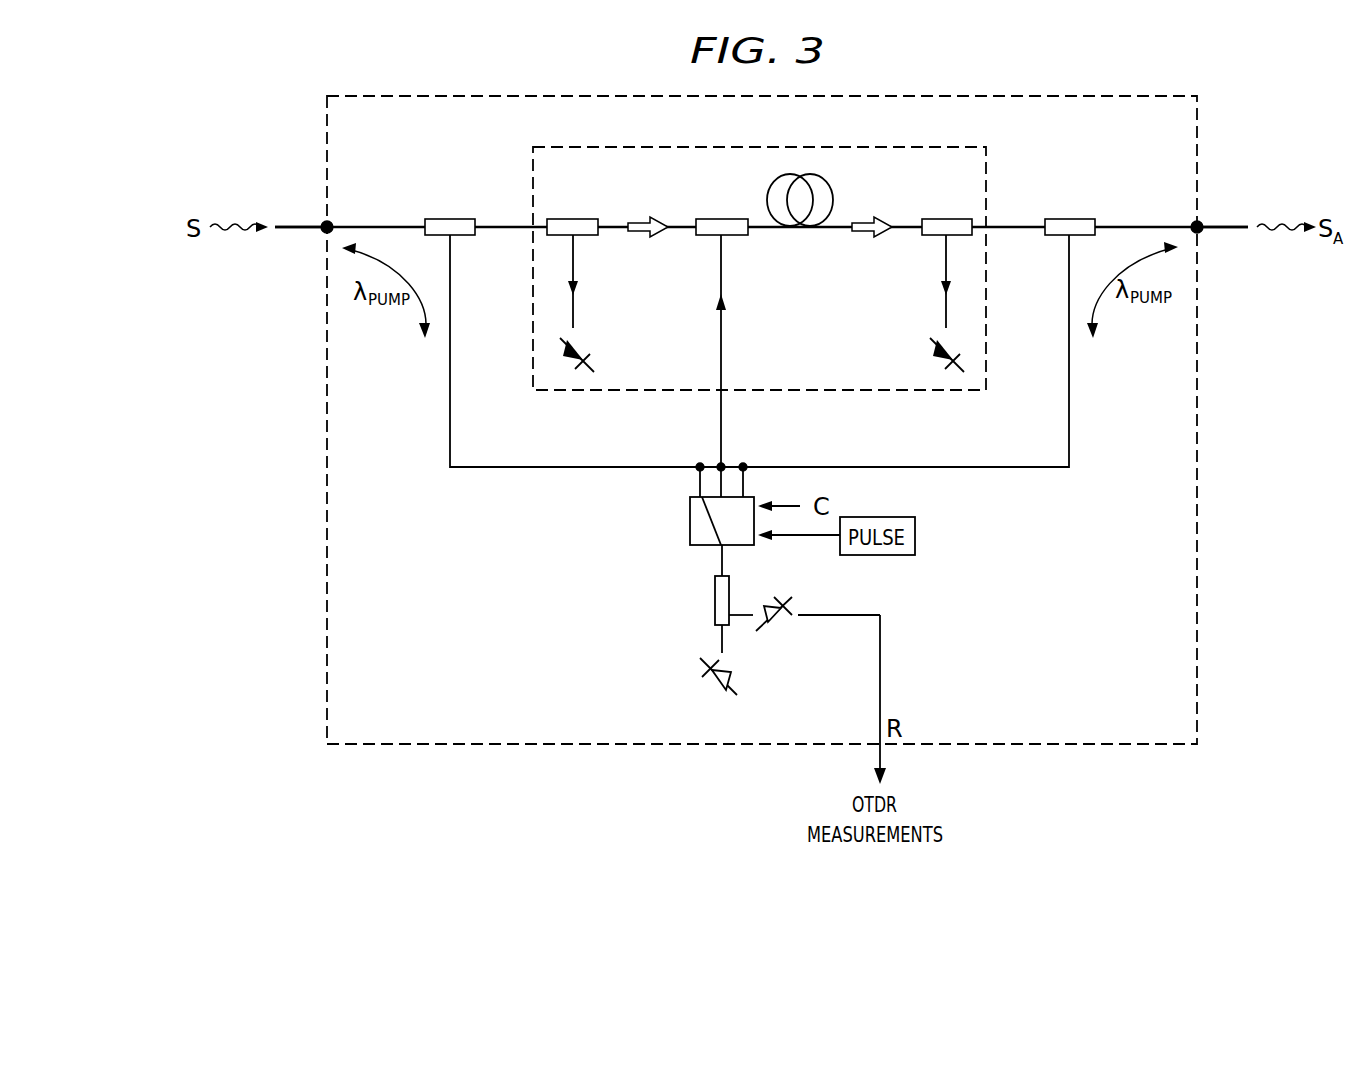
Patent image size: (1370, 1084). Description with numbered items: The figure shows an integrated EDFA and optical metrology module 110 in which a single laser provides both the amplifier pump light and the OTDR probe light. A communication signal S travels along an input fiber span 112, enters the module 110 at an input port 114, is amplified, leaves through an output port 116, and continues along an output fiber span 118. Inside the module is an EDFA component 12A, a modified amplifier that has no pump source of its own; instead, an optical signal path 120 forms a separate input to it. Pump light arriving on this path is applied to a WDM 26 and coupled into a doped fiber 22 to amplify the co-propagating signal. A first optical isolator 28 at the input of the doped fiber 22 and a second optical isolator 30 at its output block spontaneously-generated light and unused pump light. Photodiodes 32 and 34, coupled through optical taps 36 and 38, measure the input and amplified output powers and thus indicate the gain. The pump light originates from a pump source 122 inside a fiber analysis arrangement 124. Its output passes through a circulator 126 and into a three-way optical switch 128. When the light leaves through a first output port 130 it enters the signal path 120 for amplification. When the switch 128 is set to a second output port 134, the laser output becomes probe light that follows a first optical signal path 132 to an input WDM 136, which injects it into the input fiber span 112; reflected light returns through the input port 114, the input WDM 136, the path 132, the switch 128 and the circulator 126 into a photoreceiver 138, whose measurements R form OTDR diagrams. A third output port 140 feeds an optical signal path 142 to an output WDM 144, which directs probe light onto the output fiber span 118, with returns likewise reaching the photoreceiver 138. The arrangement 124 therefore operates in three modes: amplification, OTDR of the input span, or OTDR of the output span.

The EDFA component 12A is at (658, 137).
The doped fiber 22 is at (832, 194).
The WDM 26 is at (720, 219).
The first optical isolator 28 is at (637, 237).
The second optical isolator 30 is at (860, 237).
The photodiode 32 is at (584, 345).
The photodiode 34 is at (926, 352).
The optical tap 36 is at (571, 219).
The optical tap 38 is at (941, 219).
The integrated EDFA and optical metrology module 110 is at (318, 650).
The input fiber span 112 is at (291, 222).
The input port 114 is at (322, 232).
The output port 116 is at (1202, 232).
The output fiber span 118 is at (1213, 222).
The optical signal path 120 is at (723, 355).
The pump source 122 is at (711, 684).
The fiber analysis arrangement 124 is at (596, 601).
The circulator 126 is at (715, 603).
The optical switch 128 is at (690, 521).
The first output port 130 is at (723, 464).
The first optical signal path 132 is at (505, 469).
The second output port 134 is at (698, 464).
The input WDM 136 is at (443, 219).
The photoreceiver 138 is at (791, 626).
The third output port 140 is at (745, 464).
The optical signal path 142 is at (1015, 468).
The output WDM 144 is at (1065, 219).